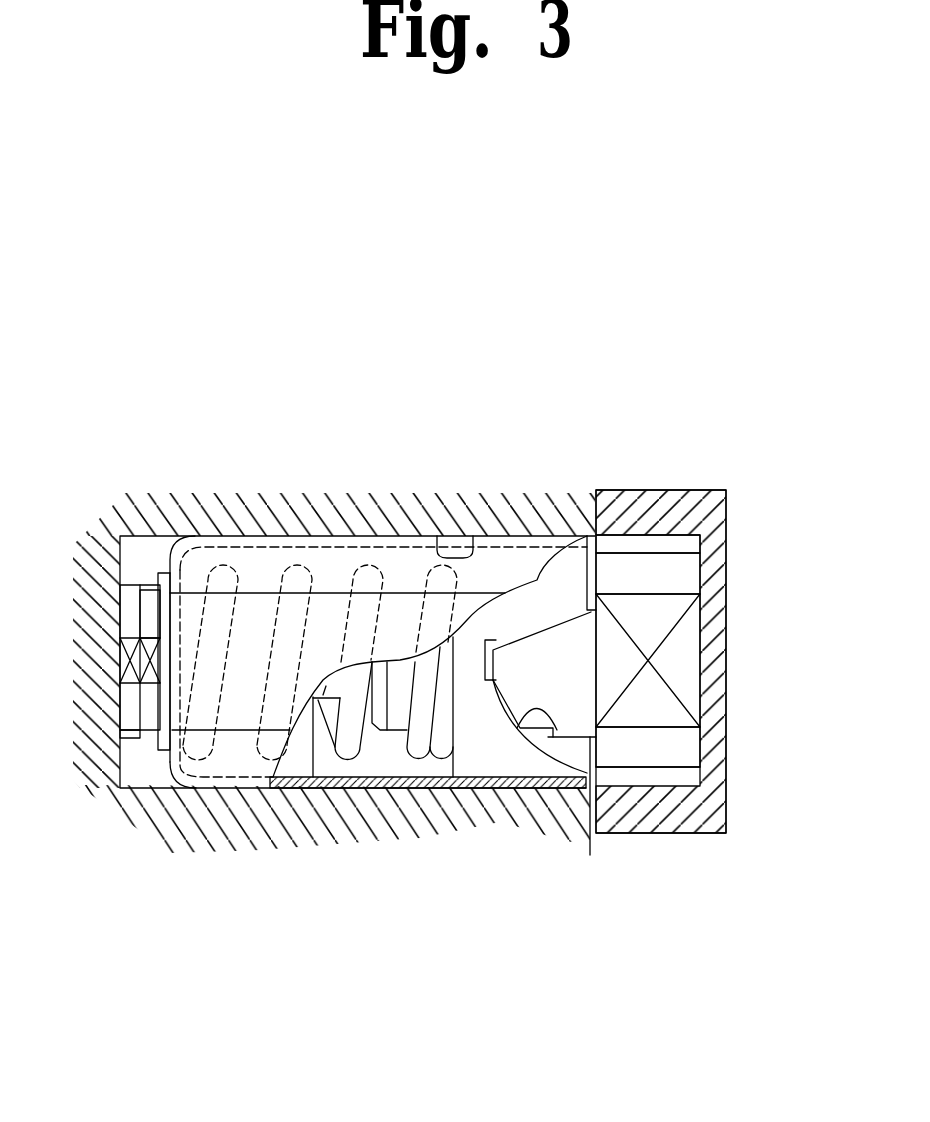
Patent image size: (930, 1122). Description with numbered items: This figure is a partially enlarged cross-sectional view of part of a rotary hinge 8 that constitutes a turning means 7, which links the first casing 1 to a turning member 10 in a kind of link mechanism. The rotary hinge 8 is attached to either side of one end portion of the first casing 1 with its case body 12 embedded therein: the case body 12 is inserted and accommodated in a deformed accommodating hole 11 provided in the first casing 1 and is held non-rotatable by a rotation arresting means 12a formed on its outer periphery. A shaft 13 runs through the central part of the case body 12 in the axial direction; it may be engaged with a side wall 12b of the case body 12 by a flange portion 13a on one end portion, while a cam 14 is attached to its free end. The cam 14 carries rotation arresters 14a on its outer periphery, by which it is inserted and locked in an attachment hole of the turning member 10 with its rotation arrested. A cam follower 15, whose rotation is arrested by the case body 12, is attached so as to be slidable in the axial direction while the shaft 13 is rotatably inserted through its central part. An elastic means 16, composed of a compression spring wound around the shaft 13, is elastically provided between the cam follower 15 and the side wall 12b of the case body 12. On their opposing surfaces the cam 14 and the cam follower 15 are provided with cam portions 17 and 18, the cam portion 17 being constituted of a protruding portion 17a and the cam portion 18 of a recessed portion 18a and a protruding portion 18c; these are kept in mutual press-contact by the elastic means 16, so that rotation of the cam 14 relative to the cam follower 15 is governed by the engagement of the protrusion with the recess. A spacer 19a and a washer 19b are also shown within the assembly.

The first casing 1 is at (362, 503).
The turning means 7 is at (742, 704).
The rotary hinge 8 is at (449, 792).
The turning member 10 is at (720, 552).
The deformed accommodating hole 11 is at (478, 548).
The case body 12 is at (263, 558).
The rotation arresting means 12a is at (245, 713).
The side wall 12b is at (177, 758).
The shaft 13 is at (316, 697).
The flange portion 13a is at (132, 725).
The cam 14 is at (695, 652).
The rotation arresters 14a is at (715, 525).
The cam follower 15 is at (495, 753).
The elastic means 16 is at (388, 760).
The cam portion 17 is at (594, 800).
The protruding portion 17a is at (548, 643).
The cam portion 18 is at (511, 610).
The recessed portion 18a is at (570, 709).
The protruding portion 18c is at (675, 547).
The spacer 19a is at (168, 578).
The washer 19b is at (148, 598).